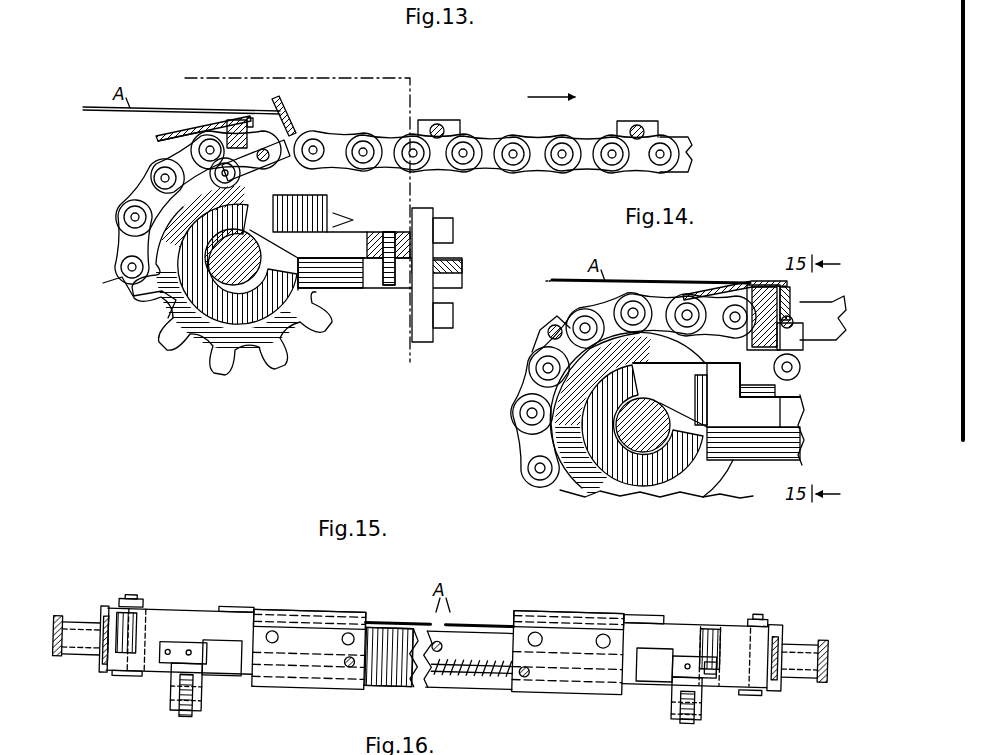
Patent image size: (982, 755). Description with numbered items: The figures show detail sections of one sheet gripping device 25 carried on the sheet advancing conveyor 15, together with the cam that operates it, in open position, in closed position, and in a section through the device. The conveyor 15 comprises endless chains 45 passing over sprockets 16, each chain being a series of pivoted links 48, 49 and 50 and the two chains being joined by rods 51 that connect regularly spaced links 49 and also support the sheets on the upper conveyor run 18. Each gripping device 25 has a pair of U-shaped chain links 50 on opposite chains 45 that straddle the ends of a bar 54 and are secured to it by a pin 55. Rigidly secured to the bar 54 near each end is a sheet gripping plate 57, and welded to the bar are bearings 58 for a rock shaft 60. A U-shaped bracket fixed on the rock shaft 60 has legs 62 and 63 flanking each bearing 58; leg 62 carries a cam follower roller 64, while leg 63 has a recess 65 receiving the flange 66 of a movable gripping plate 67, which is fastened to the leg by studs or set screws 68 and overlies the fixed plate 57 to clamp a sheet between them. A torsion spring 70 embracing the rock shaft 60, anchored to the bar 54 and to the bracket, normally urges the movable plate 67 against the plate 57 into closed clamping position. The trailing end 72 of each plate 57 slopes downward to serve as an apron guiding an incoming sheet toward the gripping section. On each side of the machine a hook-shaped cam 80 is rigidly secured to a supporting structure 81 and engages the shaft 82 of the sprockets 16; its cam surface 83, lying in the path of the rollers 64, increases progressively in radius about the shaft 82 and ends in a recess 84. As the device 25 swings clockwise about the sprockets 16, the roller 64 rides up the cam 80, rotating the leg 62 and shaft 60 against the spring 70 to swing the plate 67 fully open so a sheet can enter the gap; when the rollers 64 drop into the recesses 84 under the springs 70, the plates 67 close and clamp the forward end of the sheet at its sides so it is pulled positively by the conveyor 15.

In FIG. 13, the sheet advancing conveyor 15 is at (690, 136).
In FIG. 14, the sheet advancing conveyor 15 is at (678, 390).
In FIG. 13, the sprockets 16 is at (180, 316).
In FIG. 14, the sprockets 16 is at (594, 488).
In FIG. 13, the upper conveyor run 18 is at (698, 150).
In FIG. 13, the sheet gripping device 25 is at (185, 106).
In FIG. 15, the sheet gripping device 25 is at (160, 598).
In FIG. 13, the endless chains 45 is at (368, 122).
In FIG. 15, the endless chains 45 is at (86, 660).
In FIG. 13, the pivoted links 48 is at (536, 140).
In FIG. 13, the pivoted links 49 is at (452, 167).
In FIG. 14, the pivoted links 49 is at (535, 368).
In FIG. 13, the chain links 50 is at (197, 145).
In FIG. 15, the chain links 50 is at (103, 606).
In FIG. 13, the rods 51 is at (440, 127).
In FIG. 14, the rods 51 is at (548, 338).
In FIG. 13, the bar 54 is at (236, 118).
In FIG. 14, the bar 54 is at (765, 314).
In FIG. 15, the bar 54 is at (703, 628).
In FIG. 15, the pin 55 is at (131, 596).
In FIG. 13, the sheet gripping plate 57 is at (205, 126).
In FIG. 14, the sheet gripping plate 57 is at (748, 283).
In FIG. 15, the sheet gripping plate 57 is at (380, 615).
In FIG. 15, the bearings 58 is at (226, 637).
In FIG. 13, the rock shaft 60 is at (283, 178).
In FIG. 14, the rock shaft 60 is at (775, 318).
In FIG. 15, the rock shaft 60 is at (422, 671).
In FIG. 14, the bracket leg 62 is at (794, 345).
In FIG. 15, the bracket leg 62 is at (170, 674).
In FIG. 13, the bracket leg 63 is at (266, 182).
In FIG. 15, the bracket leg 63 is at (326, 630).
In FIG. 13, the cam follower roller 64 is at (236, 189).
In FIG. 14, the cam follower roller 64 is at (800, 368).
In FIG. 15, the cam follower roller 64 is at (186, 714).
In FIG. 13, the recess 65 is at (230, 104).
In FIG. 15, the recess 65 is at (285, 606).
In FIG. 13, the flange 66 is at (292, 148).
In FIG. 13, the movable gripping plate 67 is at (294, 128).
In FIG. 14, the movable gripping plate 67 is at (763, 292).
In FIG. 15, the movable gripping plate 67 is at (225, 603).
In FIG. 14, the studs or set screws 68 is at (796, 320).
In FIG. 15, the studs or set screws 68 is at (598, 641).
In FIG. 15, the torsion spring 70 is at (355, 670).
In FIG. 13, the trailing end 72 is at (160, 130).
In FIG. 13, the cam 80 is at (176, 265).
In FIG. 14, the cam 80 is at (590, 425).
In FIG. 13, the supporting structure 81 is at (378, 288).
In FIG. 14, the supporting structure 81 is at (800, 452).
In FIG. 13, the shaft 82 is at (252, 272).
In FIG. 14, the shaft 82 is at (650, 440).
In FIG. 13, the cam surface 83 is at (170, 225).
In FIG. 14, the cam surface 83 is at (533, 418).
In FIG. 13, the recess 84 is at (378, 234).
In FIG. 14, the recess 84 is at (800, 402).